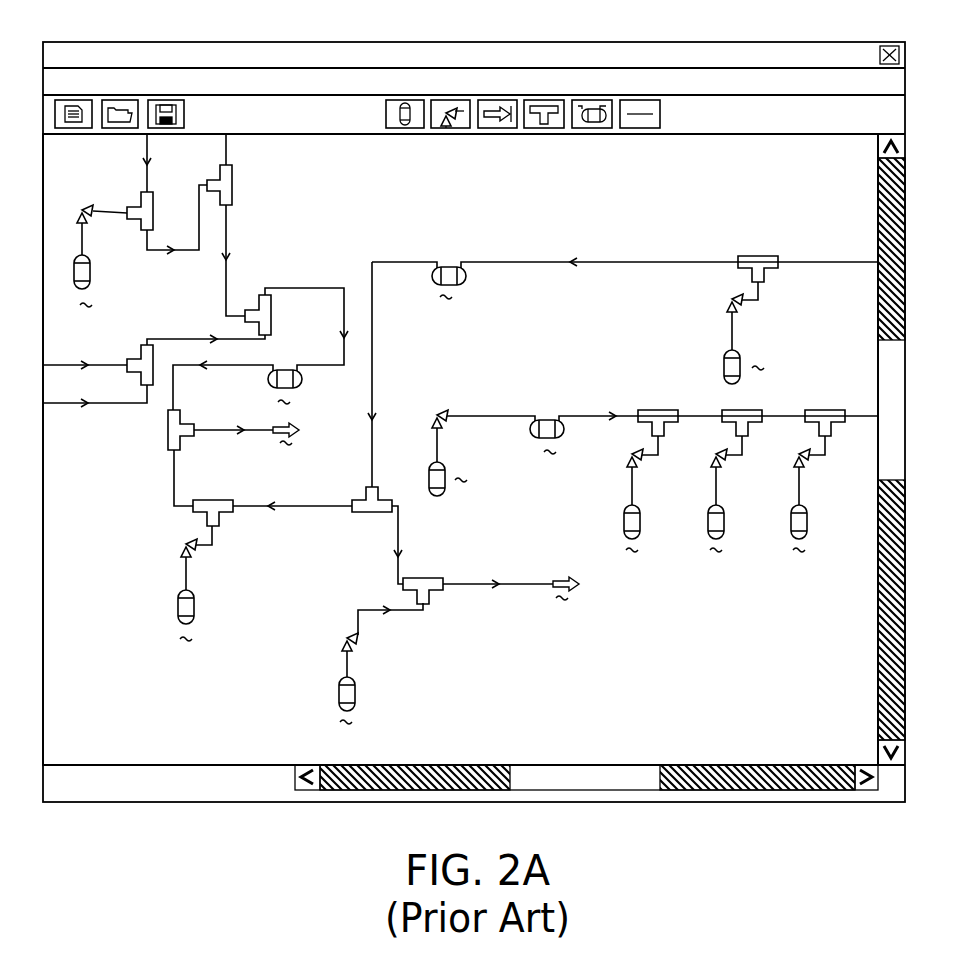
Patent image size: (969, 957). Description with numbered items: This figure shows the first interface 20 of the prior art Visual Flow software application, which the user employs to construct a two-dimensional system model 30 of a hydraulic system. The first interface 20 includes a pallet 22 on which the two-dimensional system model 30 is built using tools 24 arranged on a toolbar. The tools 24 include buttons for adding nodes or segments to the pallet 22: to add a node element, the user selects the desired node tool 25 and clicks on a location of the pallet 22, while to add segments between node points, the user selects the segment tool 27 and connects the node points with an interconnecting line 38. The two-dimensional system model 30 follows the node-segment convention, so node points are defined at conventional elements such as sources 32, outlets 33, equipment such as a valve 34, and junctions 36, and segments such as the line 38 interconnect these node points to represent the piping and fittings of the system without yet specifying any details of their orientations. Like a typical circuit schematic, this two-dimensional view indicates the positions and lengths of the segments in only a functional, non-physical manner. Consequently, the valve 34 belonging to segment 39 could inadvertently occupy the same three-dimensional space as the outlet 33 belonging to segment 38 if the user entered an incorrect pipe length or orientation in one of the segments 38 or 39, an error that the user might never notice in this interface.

The first interface 20 is at (60, 42).
The pallet 22 is at (66, 190).
The tools 24 is at (374, 116).
The node tool 25 is at (613, 136).
The segment tool 27 is at (637, 134).
The 2-D system model 30 is at (526, 670).
The source 32 is at (356, 690).
The outlet 33 is at (562, 579).
The valve 34 is at (346, 636).
The junction 36 is at (429, 602).
The line 38 is at (499, 581).
The segment 39 is at (370, 607).